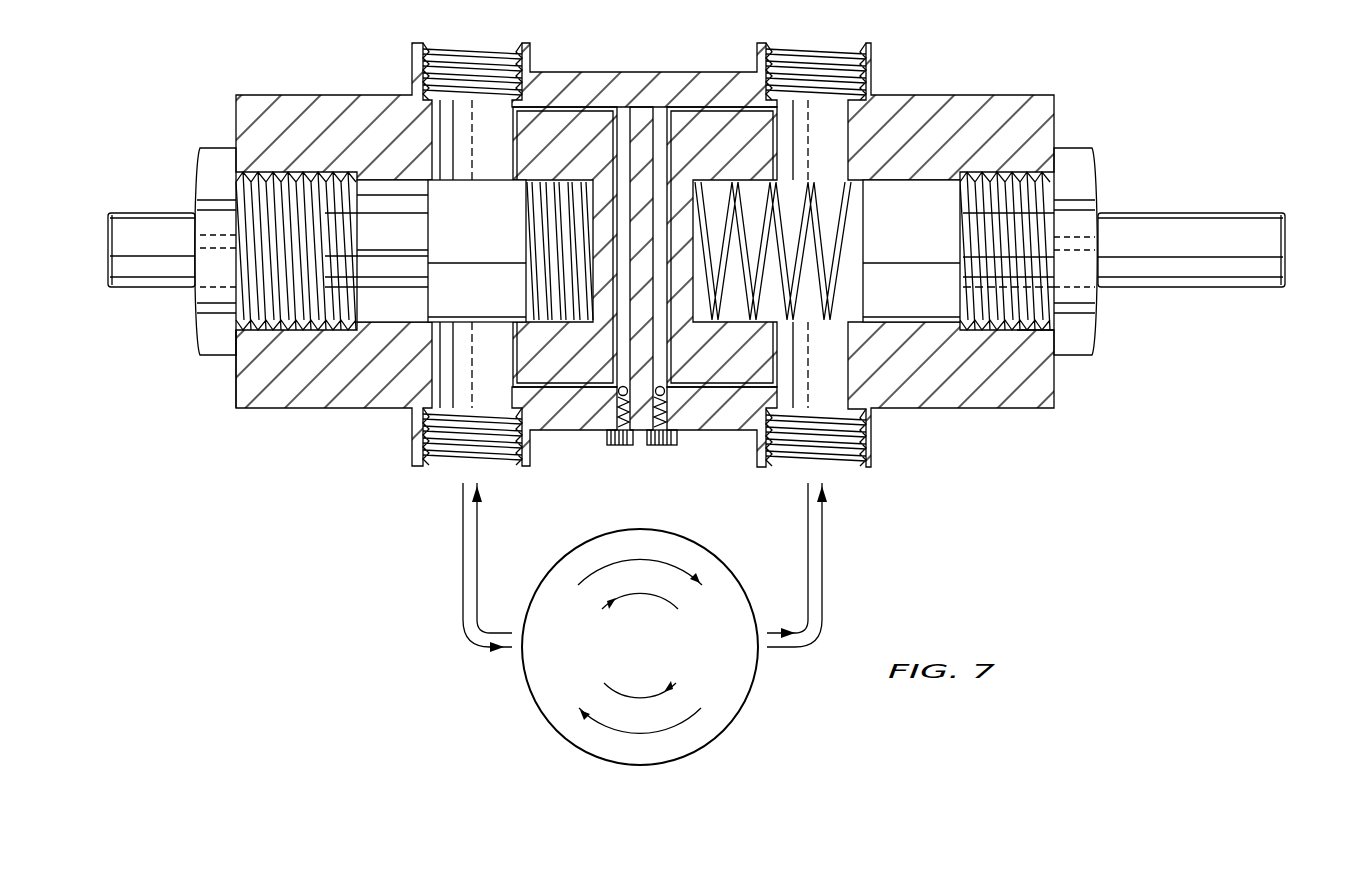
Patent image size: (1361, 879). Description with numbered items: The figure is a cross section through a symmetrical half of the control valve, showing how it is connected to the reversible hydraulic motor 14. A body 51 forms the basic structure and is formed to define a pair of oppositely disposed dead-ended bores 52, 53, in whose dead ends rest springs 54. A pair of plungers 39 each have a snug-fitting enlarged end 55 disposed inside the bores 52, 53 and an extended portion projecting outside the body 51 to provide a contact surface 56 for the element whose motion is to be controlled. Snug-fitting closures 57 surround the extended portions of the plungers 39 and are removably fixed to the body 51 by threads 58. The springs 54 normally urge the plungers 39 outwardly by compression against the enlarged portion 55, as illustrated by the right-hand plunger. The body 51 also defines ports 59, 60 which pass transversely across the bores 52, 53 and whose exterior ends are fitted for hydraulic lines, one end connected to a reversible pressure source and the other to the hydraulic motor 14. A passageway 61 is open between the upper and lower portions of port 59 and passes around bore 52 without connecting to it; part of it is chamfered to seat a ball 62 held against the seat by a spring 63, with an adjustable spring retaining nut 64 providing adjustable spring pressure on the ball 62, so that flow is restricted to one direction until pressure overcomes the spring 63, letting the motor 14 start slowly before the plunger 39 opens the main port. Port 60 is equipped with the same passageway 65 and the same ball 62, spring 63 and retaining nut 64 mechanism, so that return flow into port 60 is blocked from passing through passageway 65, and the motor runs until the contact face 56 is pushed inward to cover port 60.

The hydraulic motor 14 is at (552, 723).
The plunger 39 is at (137, 213).
The body 51 is at (309, 95).
The dead-ended bore 52 is at (392, 187).
The dead-ended bore 53 is at (957, 183).
The spring 54 is at (573, 183).
The enlarged end 55 is at (455, 325).
The contact surface 56 is at (107, 243).
The closure 57 is at (200, 180).
The threads 58 is at (237, 367).
The port 59 is at (490, 43).
The port 60 is at (822, 43).
The passageway 61 is at (510, 113).
The ball 62 is at (620, 391).
The check valve spring 63 is at (620, 402).
The plug 64 is at (637, 433).
The passageway 65 is at (777, 110).